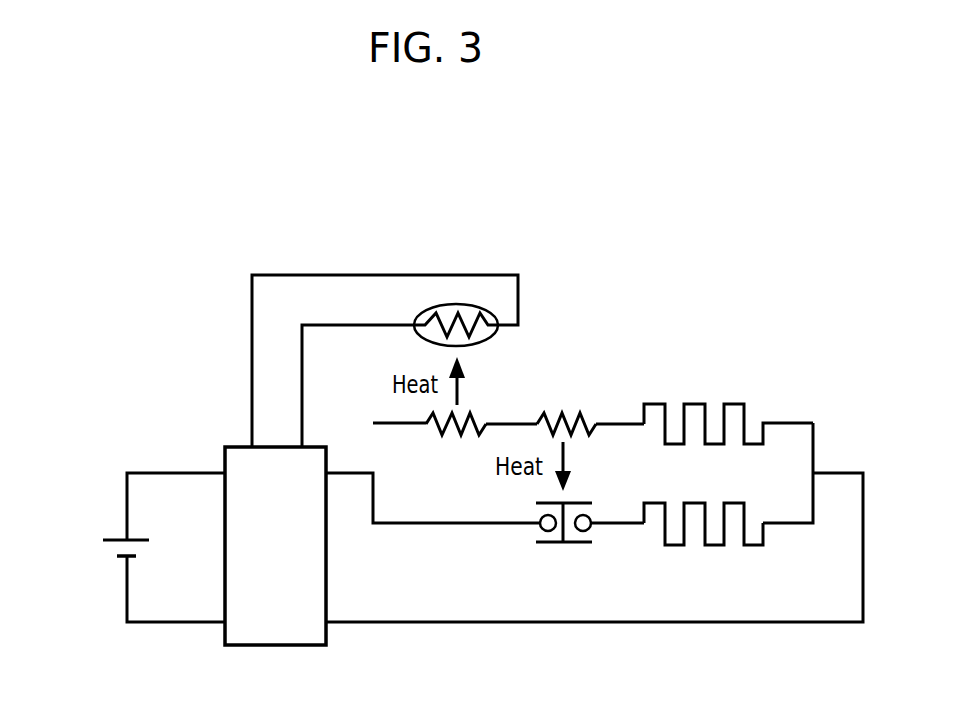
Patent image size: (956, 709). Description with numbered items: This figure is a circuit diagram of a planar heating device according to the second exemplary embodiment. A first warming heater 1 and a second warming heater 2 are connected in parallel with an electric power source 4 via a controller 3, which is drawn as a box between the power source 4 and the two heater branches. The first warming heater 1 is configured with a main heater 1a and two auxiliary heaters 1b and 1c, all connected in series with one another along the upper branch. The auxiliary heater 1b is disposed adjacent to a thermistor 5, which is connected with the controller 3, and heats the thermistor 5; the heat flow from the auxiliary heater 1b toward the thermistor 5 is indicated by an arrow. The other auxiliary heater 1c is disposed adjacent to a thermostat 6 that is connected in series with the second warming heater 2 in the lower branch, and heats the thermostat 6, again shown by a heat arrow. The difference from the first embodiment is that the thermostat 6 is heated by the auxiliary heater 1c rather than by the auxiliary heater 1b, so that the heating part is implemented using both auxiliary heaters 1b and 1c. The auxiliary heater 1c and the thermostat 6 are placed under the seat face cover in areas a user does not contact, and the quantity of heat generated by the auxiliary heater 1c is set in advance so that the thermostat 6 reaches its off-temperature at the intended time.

The first warming heater 1 is at (593, 347).
The main heater 1a is at (735, 398).
The auxiliary heater 1b is at (477, 412).
The auxiliary heater 1c is at (578, 408).
The second warming heater 2 is at (713, 553).
The controller 3 is at (230, 445).
The electric power source 4 is at (110, 533).
The thermistor 5 is at (440, 305).
The thermostat 6 is at (575, 543).